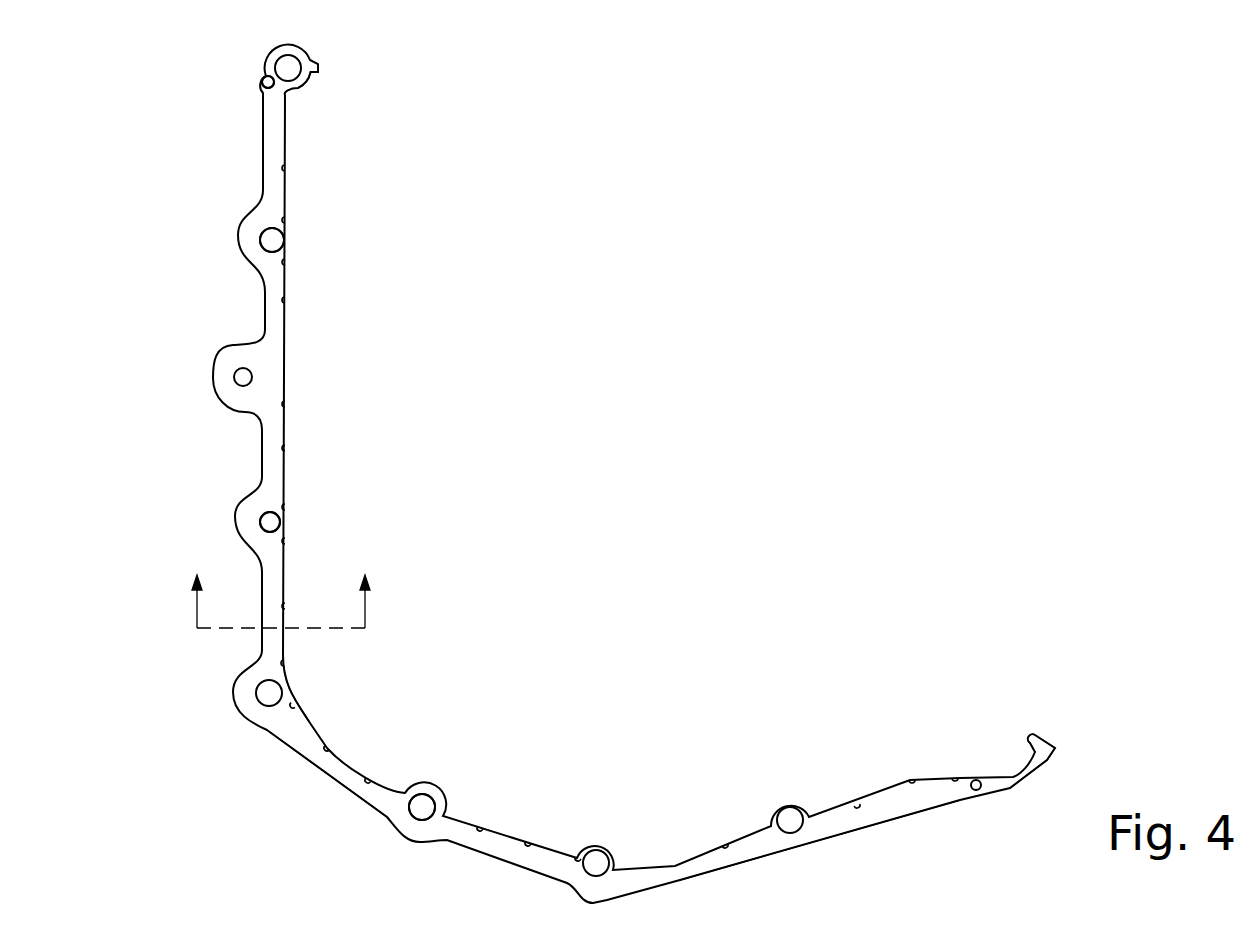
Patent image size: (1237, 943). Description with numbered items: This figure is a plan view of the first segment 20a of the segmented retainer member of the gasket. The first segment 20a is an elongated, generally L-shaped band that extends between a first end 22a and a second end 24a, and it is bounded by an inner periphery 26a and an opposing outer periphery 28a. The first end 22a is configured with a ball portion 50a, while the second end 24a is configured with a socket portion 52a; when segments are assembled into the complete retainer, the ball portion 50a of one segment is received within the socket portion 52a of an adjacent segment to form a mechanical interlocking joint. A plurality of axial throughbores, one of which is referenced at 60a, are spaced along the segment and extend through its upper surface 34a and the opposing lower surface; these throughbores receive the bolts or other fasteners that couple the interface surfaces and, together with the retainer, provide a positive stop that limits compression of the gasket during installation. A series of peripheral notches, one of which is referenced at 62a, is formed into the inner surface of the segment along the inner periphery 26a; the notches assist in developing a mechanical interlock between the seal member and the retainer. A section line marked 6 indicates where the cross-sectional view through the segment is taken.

The first segment 20a is at (690, 390).
The first end 22a is at (1010, 790).
The second end 24a is at (296, 88).
The inner periphery 26a is at (308, 724).
The outer periphery 28a is at (300, 758).
The upper surface 34a is at (393, 806).
The ball portion 50a is at (1028, 740).
The socket portion 52a is at (259, 84).
The axial throughbore 60a is at (272, 521).
The peripheral notch 62a is at (270, 240).
The section line 6- 6 is at (282, 601).